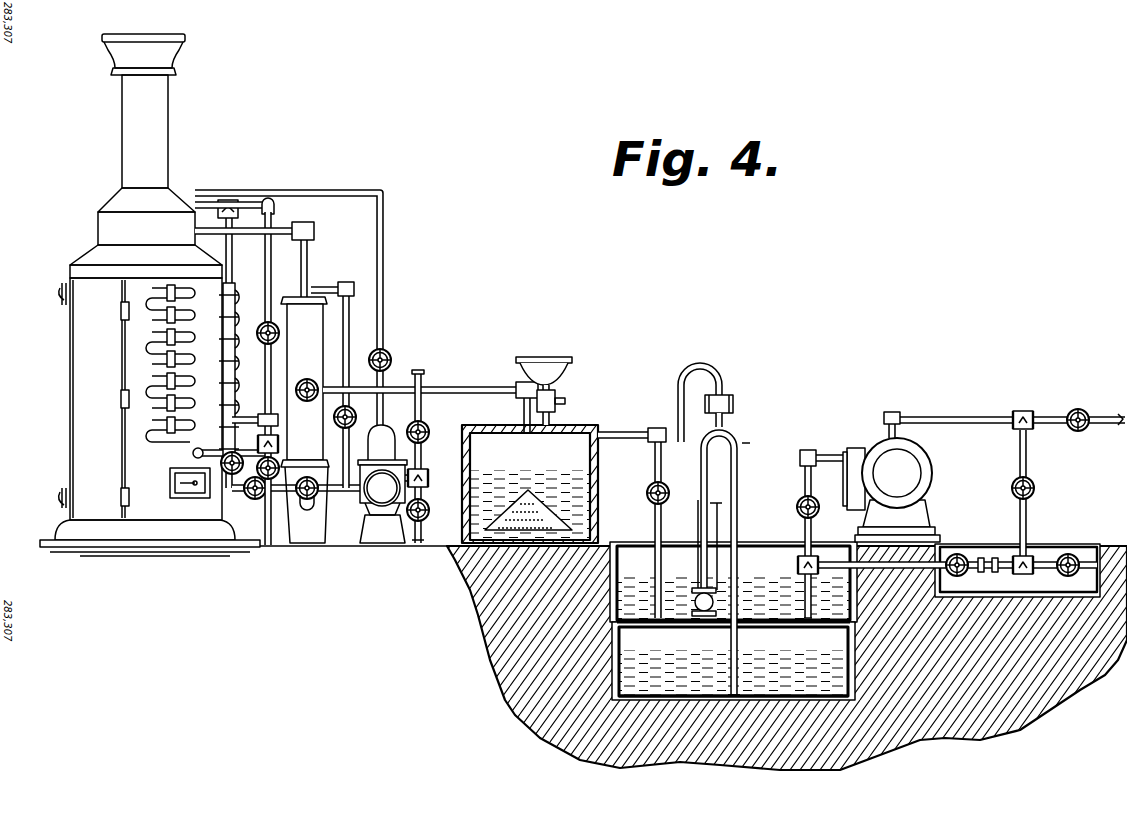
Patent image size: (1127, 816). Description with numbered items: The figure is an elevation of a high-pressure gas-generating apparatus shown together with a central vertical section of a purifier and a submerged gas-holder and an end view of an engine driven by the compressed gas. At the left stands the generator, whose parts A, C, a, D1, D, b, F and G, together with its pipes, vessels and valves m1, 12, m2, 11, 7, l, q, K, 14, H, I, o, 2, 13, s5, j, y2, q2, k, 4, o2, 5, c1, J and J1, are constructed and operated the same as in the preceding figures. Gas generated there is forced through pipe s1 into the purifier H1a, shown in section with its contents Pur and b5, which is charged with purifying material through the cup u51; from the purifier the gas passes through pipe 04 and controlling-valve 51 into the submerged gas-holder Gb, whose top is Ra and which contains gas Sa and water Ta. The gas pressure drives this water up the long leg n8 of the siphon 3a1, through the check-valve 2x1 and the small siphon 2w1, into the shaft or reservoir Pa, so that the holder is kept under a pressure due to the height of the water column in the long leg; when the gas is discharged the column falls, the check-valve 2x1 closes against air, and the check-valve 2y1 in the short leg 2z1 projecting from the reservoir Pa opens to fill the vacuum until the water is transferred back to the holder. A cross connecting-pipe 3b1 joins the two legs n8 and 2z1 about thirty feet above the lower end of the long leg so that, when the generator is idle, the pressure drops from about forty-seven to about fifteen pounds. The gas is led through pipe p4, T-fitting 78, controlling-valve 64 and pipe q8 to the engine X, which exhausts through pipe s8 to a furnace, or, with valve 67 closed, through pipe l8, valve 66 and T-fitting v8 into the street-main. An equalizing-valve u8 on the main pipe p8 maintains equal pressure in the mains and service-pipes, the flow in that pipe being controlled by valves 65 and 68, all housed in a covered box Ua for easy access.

The submerged gas-holder Gb is at (787, 658).
The top of the holder Ra is at (733, 582).
The gas in the holder Sa is at (733, 661).
The water in the holder Ta is at (733, 675).
The long leg of the siphon n8 is at (733, 634).
The box Ua is at (1017, 585).
The base A is at (243, 537).
The boiler casing C is at (146, 277).
The hinges a is at (112, 406).
The door handle D1 is at (43, 294).
The door handle D is at (45, 500).
The coil b is at (180, 363).
The furnace door F is at (190, 494).
The connection G is at (230, 457).
The header pipe m1 is at (241, 331).
The valve 12 is at (241, 470).
The pipe m2 is at (296, 499).
The valve 11 is at (269, 484).
The valve 7 is at (311, 484).
The pipe l is at (296, 316).
The pipe q is at (273, 378).
The pipe K is at (262, 261).
The flange 14 is at (304, 318).
The vessel H is at (305, 382).
The vessel I is at (305, 501).
The pipe o is at (339, 385).
The valve 2 is at (350, 414).
The pipe s1 is at (433, 429).
The valve 13 is at (307, 399).
The pipe s5 is at (250, 421).
The coupling j is at (269, 414).
The tee y2 is at (277, 444).
The valve q2 is at (268, 468).
The pipe k is at (425, 456).
The valve 4 is at (424, 432).
The tee o2 is at (426, 477).
The valve 5 is at (424, 510).
The pipe end c1 is at (426, 531).
The vessel J is at (382, 465).
The vessel base J1 is at (382, 523).
The purifier Pur is at (530, 484).
The cone b5 is at (528, 507).
The cup u51 is at (544, 358).
The purifier H1a is at (567, 405).
The pipe 04 is at (642, 517).
The controlling-valve 51 is at (641, 491).
The small siphon 2w1 is at (677, 402).
The check-valve 2x1 is at (735, 411).
The shaft or reservoir Pa is at (722, 564).
The siphon 3a1 is at (762, 443).
The cross connecting-pipe 3b1 is at (743, 536).
The short leg of the siphon 2z1 is at (680, 545).
The check-valve 2y1 is at (689, 602).
The pipe q8 is at (808, 534).
The controlling-valve 64 is at (792, 507).
The pipe p4 is at (820, 606).
The main pipe p8 is at (956, 577).
The T-fitting 78 is at (796, 565).
The engine X is at (984, 477).
The pipe s8 is at (1033, 409).
The pipe l8 is at (1014, 484).
The valve 67 is at (1082, 433).
The valve 66 is at (1039, 488).
The T-fitting v8 is at (1023, 574).
The equalizing-valve u8 is at (988, 575).
The valve 65 is at (957, 548).
The valve 68 is at (1072, 548).